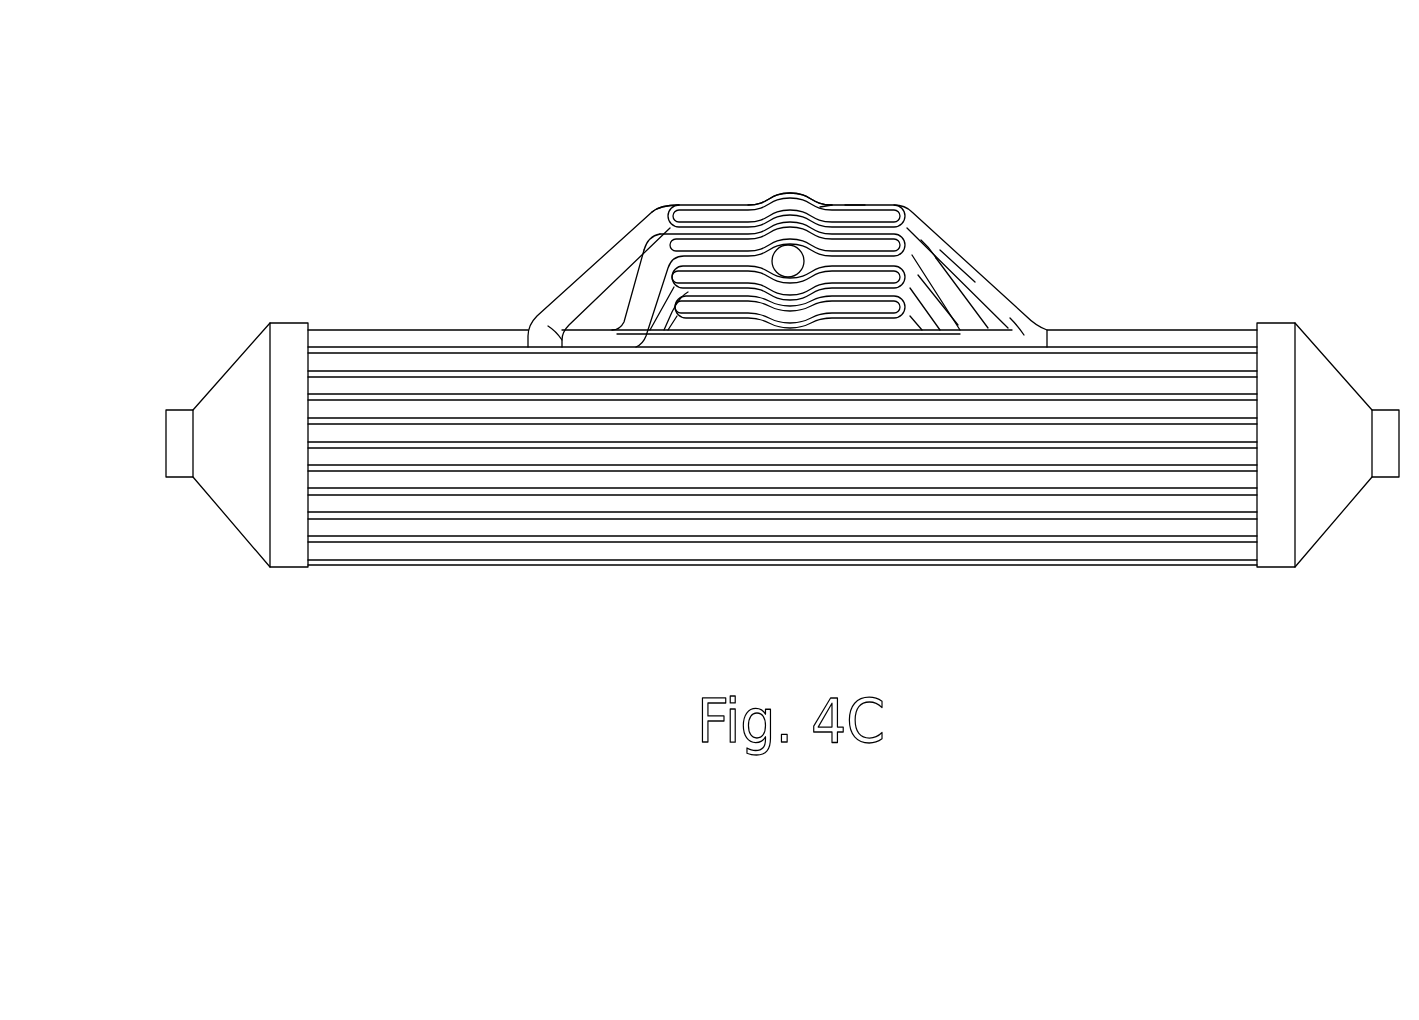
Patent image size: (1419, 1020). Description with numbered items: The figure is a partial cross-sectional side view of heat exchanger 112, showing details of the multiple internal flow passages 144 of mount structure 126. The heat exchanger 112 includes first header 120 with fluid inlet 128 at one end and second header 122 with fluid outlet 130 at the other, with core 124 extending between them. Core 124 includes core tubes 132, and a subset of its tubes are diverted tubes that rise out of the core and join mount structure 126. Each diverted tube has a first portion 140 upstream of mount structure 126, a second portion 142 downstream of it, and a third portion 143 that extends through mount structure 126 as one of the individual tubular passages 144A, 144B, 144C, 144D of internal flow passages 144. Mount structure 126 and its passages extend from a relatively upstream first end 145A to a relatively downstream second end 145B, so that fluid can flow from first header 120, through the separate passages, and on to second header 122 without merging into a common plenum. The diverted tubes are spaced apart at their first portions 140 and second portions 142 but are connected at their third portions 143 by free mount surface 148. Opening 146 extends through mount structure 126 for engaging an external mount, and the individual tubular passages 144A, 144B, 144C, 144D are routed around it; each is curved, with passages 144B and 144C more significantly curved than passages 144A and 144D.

The heat exchanger 112 is at (768, 355).
The first header 120 is at (242, 317).
The second header 122 is at (1303, 302).
The core 124 is at (915, 575).
The mount structure 126 is at (712, 205).
The fluid inlet 128 is at (177, 420).
The fluid outlet 130 is at (1385, 428).
The core tubes 132 is at (410, 363).
The first portion 140 is at (608, 278).
The second portion 142 is at (1000, 262).
The third portion 143 is at (825, 208).
The internal flow passages 144 is at (788, 261).
The individual tubular passage 144A is at (690, 210).
The individual tubular passage 144B is at (875, 232).
The individual tubular passage 144C is at (905, 237).
The individual tubular passage 144D is at (717, 305).
The first end 145A is at (658, 220).
The second end 145B is at (958, 275).
The opening 146 is at (777, 203).
The free mount surface 148 is at (855, 205).